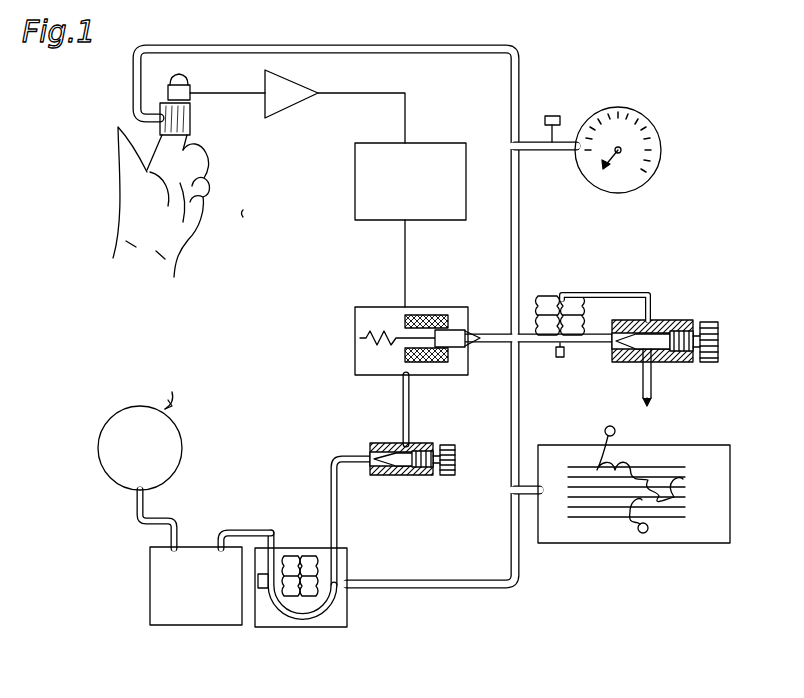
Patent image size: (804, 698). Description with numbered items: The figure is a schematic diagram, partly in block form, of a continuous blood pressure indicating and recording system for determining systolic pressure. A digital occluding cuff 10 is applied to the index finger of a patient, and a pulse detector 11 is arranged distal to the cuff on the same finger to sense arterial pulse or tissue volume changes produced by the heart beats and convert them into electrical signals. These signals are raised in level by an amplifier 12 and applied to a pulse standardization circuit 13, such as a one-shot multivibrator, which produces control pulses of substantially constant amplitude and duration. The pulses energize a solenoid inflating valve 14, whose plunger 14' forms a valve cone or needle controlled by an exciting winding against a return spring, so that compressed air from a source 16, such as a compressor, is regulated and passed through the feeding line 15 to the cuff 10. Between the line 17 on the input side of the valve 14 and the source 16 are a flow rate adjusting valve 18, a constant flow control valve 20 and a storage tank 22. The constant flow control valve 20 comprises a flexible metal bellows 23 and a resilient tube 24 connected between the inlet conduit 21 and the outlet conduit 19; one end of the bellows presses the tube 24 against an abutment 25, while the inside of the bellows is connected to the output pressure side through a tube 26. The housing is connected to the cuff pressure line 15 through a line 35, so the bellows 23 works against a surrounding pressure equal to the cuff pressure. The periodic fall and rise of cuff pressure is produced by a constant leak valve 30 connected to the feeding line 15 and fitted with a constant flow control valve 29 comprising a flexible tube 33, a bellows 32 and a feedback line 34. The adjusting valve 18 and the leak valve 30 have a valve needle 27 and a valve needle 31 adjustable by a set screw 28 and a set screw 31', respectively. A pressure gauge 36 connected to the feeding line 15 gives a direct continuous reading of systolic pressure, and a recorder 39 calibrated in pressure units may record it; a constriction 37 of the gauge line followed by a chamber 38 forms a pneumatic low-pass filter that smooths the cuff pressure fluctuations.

The digital occluding cuff 10 is at (192, 113).
The pulse detector 11 is at (183, 90).
The amplifier 12 is at (317, 99).
The pulse standardization circuit 13 is at (466, 150).
The inflating valve 14 is at (425, 322).
The plunger 14' is at (465, 318).
The feeding line 15 is at (519, 237).
The source 16 is at (138, 432).
The line 17 is at (412, 411).
The flow rate adjusting valve 18 is at (416, 457).
The outlet conduit 19 is at (349, 456).
The constant flow control valve 20 is at (305, 590).
The inlet conduit 21 is at (266, 527).
The storage tank 22 is at (150, 596).
The flexible metal bellows 23 is at (300, 556).
The resilient tube 24 is at (272, 618).
The abutment 25 is at (266, 573).
The tube 26 is at (305, 627).
The valve needle 27 is at (396, 477).
The set screw 28 is at (453, 470).
The constant flow control valve 29 is at (550, 292).
The constant leak valve 30 is at (658, 346).
The valve needle 31 is at (634, 370).
The set screw 31' is at (694, 362).
The bellows 32 is at (584, 312).
The flexible tube 33 is at (553, 350).
The feedback line 34 is at (610, 291).
The line 35 is at (519, 412).
The pressure gauge 36 is at (661, 149).
The constriction 37 is at (521, 147).
The chamber 38 is at (555, 115).
The recorder 39 is at (590, 545).